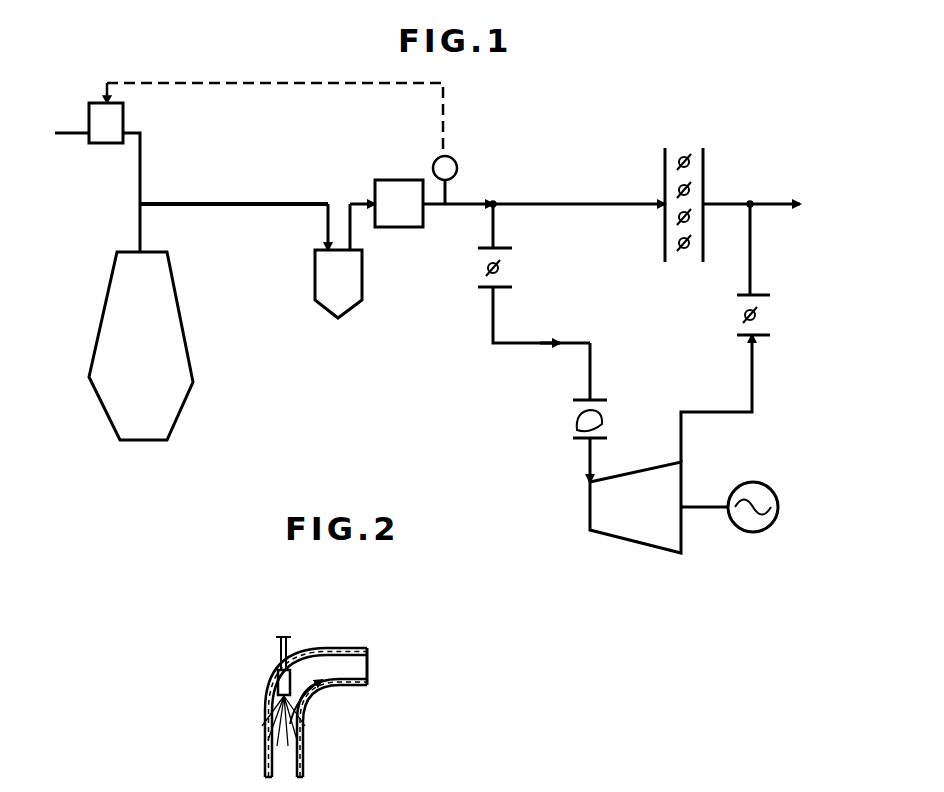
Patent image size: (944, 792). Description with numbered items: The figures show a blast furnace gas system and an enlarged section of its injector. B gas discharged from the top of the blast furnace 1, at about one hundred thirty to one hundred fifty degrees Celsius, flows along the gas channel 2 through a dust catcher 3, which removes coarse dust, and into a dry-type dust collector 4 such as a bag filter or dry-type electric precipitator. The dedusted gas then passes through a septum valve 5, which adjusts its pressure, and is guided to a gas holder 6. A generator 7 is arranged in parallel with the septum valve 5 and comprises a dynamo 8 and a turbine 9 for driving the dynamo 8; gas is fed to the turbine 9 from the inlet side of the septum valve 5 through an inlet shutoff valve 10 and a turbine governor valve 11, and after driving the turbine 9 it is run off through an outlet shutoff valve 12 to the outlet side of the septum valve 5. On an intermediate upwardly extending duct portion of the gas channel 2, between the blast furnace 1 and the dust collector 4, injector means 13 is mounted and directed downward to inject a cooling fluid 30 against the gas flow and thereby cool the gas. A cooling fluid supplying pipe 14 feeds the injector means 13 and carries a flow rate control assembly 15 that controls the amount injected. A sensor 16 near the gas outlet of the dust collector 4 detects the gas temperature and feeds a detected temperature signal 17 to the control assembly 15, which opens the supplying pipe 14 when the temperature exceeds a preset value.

In FIG. 1, the blast furnace 1 is at (193, 365).
In FIG. 1, the gas channel 2 is at (350, 200).
In FIG. 2, the gas channel 2 is at (325, 690).
In FIG. 1, the dust catcher 3 is at (330, 318).
In FIG. 1, the dry-type dust collector 4 is at (413, 227).
In FIG. 1, the septum valve 5 is at (703, 160).
In FIG. 1, the gas holder 6 is at (784, 204).
In FIG. 1, the generator 7 is at (704, 521).
In FIG. 1, the dynamo 8 is at (770, 490).
In FIG. 1, the turbine 9 is at (595, 535).
In FIG. 1, the inlet shutoff valve 10 is at (505, 270).
In FIG. 1, the turbine governor valve 11 is at (606, 420).
In FIG. 1, the outlet shutoff valve 12 is at (760, 318).
In FIG. 1, the injector means 13 is at (140, 200).
In FIG. 2, the injector means 13 is at (278, 672).
In FIG. 1, the cooling fluid supplying pipe 14 is at (70, 134).
In FIG. 2, the cooling fluid supplying pipe 14 is at (288, 640).
In FIG. 1, the flow rate control assembly 15 is at (123, 113).
In FIG. 1, the sensor 16 is at (456, 161).
In FIG. 1, the detected temperature signal 17 is at (313, 83).
In FIG. 2, the cooling fluid 30 is at (278, 722).